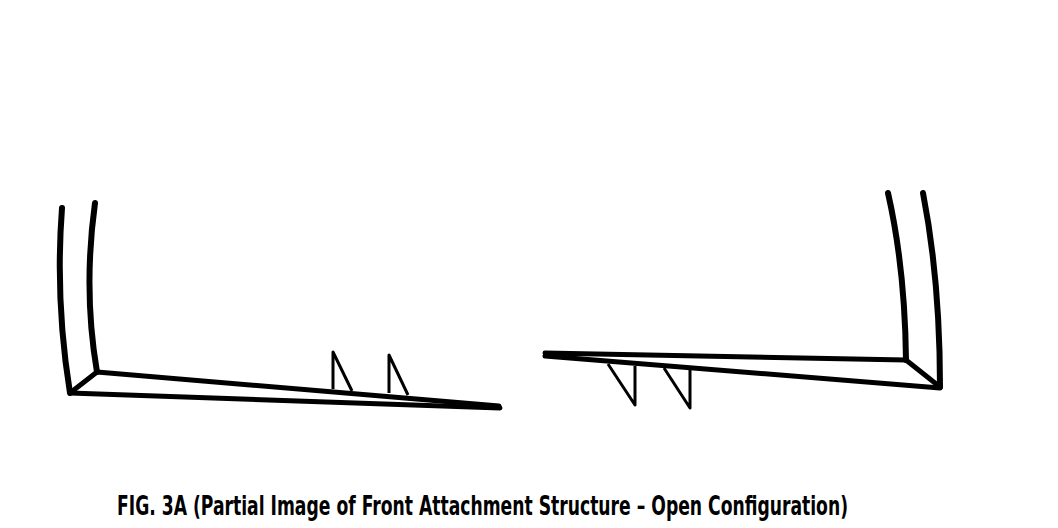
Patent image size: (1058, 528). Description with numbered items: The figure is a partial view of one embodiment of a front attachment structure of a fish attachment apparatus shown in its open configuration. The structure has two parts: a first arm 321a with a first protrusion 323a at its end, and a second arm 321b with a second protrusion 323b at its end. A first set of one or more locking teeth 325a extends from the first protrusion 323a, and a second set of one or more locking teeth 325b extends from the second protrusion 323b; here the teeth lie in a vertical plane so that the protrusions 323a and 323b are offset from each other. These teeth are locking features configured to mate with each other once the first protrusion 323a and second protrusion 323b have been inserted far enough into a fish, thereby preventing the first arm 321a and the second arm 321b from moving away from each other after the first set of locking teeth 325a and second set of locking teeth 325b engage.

The first arm 321a is at (77, 240).
The first protrusion 323a is at (148, 388).
The first set of locking teeth 325a is at (397, 388).
The second arm 321b is at (913, 215).
The second protrusion 323b is at (842, 370).
The second set of locking teeth 325b is at (680, 384).